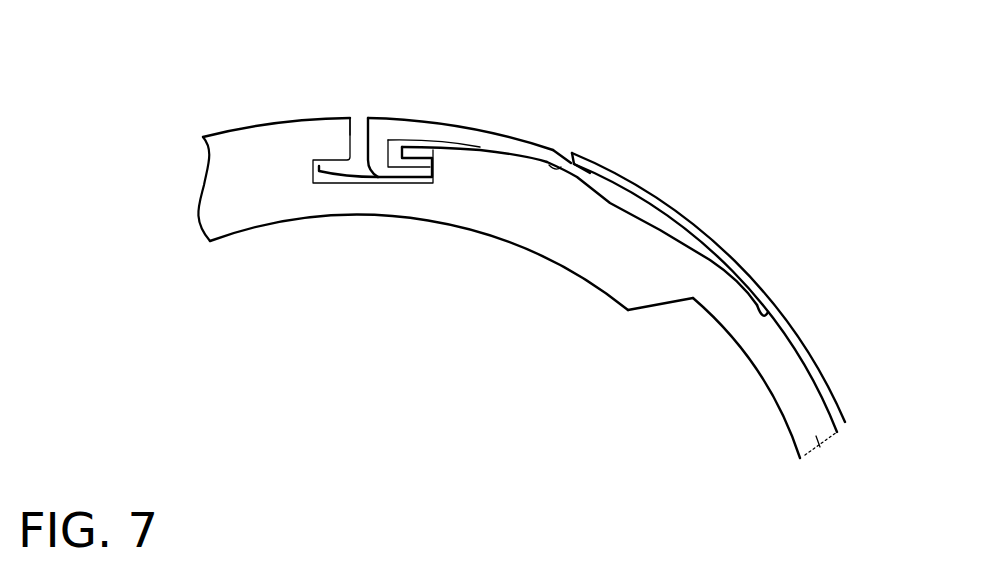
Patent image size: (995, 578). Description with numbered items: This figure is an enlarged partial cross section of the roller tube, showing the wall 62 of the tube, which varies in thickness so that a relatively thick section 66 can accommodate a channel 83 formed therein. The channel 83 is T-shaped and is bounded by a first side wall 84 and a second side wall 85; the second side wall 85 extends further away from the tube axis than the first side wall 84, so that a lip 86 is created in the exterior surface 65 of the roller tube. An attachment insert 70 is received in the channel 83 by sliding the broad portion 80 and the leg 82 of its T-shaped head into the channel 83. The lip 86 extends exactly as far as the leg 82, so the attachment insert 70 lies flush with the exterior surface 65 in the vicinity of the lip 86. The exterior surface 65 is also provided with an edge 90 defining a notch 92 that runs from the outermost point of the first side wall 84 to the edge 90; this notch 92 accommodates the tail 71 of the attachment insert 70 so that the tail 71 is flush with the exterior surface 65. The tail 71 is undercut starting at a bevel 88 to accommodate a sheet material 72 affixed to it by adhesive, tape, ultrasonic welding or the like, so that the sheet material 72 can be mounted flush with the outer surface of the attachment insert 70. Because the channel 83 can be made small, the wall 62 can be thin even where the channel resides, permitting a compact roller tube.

The wall 62 is at (820, 446).
The exterior surface 65 is at (220, 136).
The relatively thick section 66 is at (324, 138).
The attachment insert 70 is at (445, 130).
The tail 71 is at (541, 146).
The sheet material 72 is at (830, 388).
The broad portion 80 is at (375, 182).
The leg 82 is at (373, 118).
The channel 83 is at (367, 126).
The first side wall 84 is at (433, 150).
The second side wall 85 is at (348, 141).
The lip 86 is at (357, 137).
The bevel 88 is at (567, 152).
The edge 90 is at (767, 326).
The notch 92 is at (612, 205).